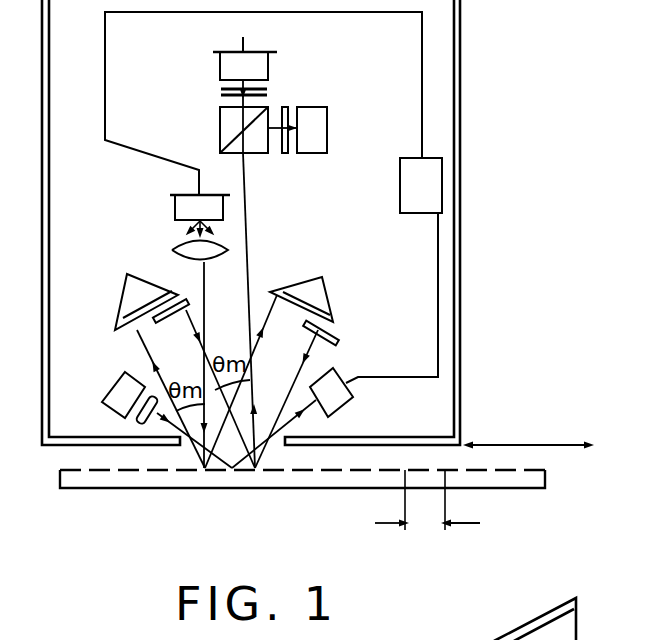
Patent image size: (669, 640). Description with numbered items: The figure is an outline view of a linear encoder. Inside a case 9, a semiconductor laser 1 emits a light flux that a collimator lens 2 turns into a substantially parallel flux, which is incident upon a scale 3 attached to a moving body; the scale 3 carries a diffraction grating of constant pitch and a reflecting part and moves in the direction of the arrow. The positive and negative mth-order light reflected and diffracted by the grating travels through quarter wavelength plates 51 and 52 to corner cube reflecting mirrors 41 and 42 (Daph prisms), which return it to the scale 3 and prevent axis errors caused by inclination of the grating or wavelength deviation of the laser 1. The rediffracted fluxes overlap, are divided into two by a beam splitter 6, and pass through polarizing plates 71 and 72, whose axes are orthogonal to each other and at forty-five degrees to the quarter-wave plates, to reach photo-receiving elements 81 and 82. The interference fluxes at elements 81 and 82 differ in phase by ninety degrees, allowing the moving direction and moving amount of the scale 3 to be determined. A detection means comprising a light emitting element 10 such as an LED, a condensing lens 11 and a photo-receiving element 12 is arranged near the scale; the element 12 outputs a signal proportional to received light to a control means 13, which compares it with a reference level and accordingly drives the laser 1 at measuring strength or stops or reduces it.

The semiconductor laser 1 is at (175, 205).
The collimator lens 2 is at (172, 250).
The scale 3 is at (525, 482).
The corner cube reflecting mirror 41 is at (128, 292).
The corner cube reflecting mirror 42 is at (322, 295).
The quarter wavelength plate 51 is at (137, 335).
The quarter wavelength plate 52 is at (338, 341).
The beam splitter 6 is at (221, 128).
The polarizing plate 71 is at (270, 94).
The polarizing plate 72 is at (288, 107).
The photo-receiving element 81 is at (221, 67).
The photo-receiving element 82 is at (327, 130).
The case 9 is at (462, 190).
The light emitting element 10 is at (108, 394).
The condensing lens 11 is at (137, 423).
The photo-receiving element 12 is at (347, 402).
The control means 13 is at (400, 190).